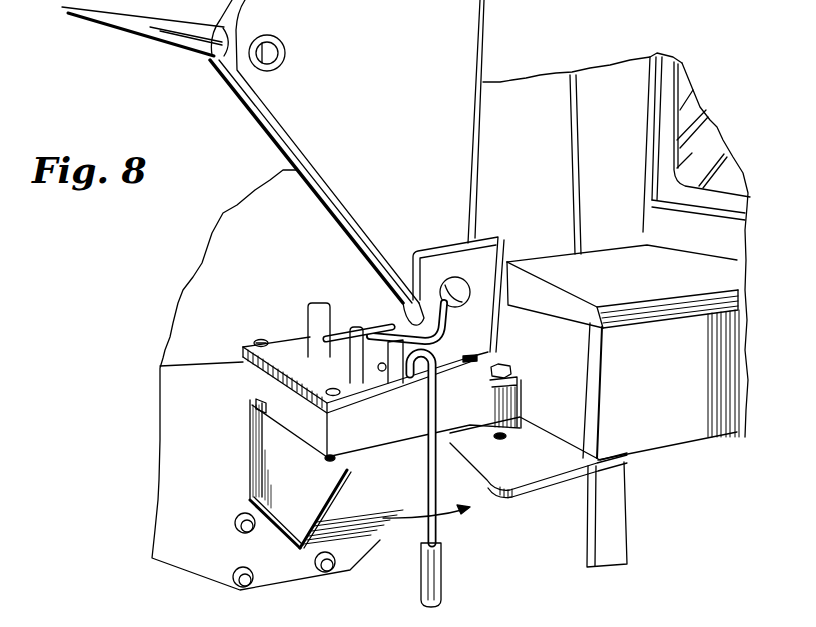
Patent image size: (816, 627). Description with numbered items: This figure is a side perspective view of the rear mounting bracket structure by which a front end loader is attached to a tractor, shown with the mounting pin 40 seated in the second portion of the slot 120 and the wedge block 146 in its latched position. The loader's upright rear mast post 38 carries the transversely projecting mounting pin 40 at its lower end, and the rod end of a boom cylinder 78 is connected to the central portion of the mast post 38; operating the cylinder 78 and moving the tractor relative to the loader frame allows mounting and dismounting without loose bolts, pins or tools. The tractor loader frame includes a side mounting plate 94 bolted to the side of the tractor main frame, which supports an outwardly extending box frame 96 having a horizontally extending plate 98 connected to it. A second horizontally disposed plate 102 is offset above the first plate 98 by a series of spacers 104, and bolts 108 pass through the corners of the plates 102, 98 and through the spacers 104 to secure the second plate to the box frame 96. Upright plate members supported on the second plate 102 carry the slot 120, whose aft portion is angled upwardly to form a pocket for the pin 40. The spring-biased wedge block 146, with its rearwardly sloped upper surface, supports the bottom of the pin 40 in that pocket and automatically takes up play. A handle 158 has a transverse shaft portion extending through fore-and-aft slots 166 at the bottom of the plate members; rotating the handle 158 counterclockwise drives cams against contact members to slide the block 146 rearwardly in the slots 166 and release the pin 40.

The rear mast post 38 is at (366, 85).
The mounting pin 40 is at (455, 277).
The boom cylinder 78 is at (118, 32).
The side mounting plate 94 is at (211, 473).
The box frame 96 is at (274, 436).
The horizontally extending plate 98 is at (263, 411).
The second horizontally disposed plate 102 is at (295, 343).
The spacer 104 is at (243, 365).
The bolt 108 is at (260, 338).
The slot 120 is at (367, 307).
The wedge block 146 is at (440, 322).
The handle 158 is at (428, 489).
The fore-and-aft extending slot 166 is at (504, 363).